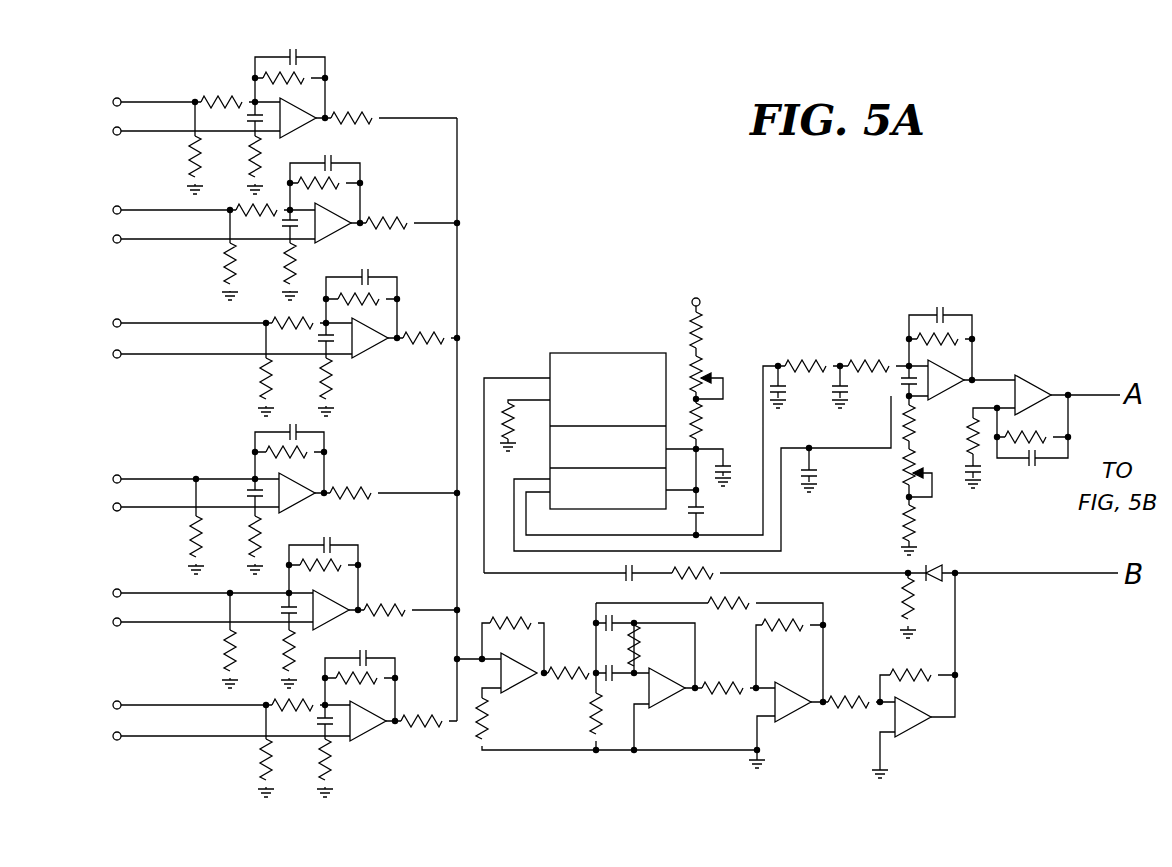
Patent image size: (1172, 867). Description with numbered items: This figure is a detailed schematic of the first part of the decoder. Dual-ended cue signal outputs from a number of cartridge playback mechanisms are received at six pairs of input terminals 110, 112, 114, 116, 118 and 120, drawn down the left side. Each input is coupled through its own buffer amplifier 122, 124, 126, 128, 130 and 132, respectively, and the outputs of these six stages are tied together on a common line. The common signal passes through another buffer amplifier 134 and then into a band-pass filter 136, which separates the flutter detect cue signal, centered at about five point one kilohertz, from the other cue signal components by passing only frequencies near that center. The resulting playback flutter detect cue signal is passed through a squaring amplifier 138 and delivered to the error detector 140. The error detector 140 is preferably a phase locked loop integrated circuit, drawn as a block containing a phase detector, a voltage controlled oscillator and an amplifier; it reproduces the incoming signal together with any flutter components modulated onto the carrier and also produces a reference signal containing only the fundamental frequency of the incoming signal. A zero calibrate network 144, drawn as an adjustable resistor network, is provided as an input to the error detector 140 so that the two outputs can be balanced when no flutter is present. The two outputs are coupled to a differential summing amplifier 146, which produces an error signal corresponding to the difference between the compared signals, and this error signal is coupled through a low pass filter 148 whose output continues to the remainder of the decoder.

The input terminal 110 is at (173, 145).
The input terminal 112 is at (191, 252).
The input terminal 114 is at (209, 366).
The input terminal 116 is at (172, 524).
The input terminal 118 is at (192, 638).
The input terminal 120 is at (209, 748).
The buffer amplifier 122 is at (305, 121).
The buffer amplifier 124 is at (336, 232).
The buffer amplifier 126 is at (368, 352).
The buffer amplifier 128 is at (300, 504).
The buffer amplifier 130 is at (336, 617).
The buffer amplifier 132 is at (370, 736).
The buffer amplifier 134 is at (514, 690).
The band-pass filter 136 is at (660, 704).
The squaring amplifier 138 is at (912, 730).
The error detector 140 is at (577, 352).
The zero calibrate network 144 is at (703, 377).
The differential summing amplifier 146 is at (943, 398).
The low pass filter 148 is at (1033, 382).